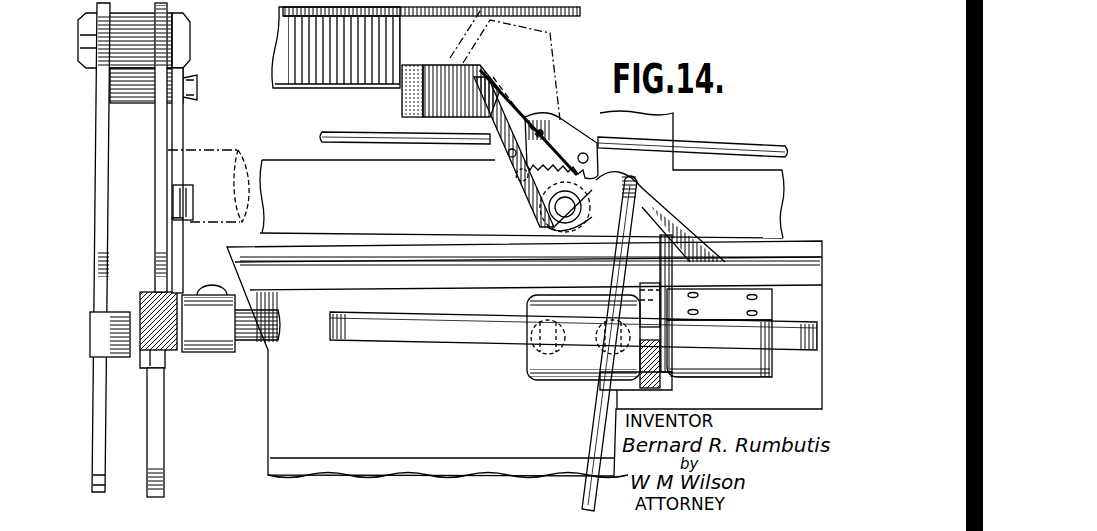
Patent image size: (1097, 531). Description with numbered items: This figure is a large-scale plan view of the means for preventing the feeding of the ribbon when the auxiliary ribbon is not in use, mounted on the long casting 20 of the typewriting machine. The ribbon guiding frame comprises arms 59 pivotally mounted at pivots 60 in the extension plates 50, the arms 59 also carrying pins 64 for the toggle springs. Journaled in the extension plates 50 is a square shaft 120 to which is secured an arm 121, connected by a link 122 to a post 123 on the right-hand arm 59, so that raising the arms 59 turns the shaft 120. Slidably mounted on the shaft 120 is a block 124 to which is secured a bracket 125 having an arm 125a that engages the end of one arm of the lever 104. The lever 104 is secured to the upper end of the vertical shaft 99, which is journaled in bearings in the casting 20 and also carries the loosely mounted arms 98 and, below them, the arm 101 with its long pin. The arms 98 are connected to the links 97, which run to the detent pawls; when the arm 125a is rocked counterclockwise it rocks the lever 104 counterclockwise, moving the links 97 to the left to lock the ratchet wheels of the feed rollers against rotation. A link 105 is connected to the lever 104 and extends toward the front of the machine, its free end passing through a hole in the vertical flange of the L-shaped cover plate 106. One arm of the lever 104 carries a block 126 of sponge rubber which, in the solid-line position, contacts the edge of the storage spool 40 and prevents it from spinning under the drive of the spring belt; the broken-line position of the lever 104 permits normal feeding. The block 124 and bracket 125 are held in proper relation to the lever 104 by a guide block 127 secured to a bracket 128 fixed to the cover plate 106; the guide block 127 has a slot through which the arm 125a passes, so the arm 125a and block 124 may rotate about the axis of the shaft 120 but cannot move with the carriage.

The casting 20 is at (423, 180).
The storage spool 40 is at (547, 17).
The extension plates 50 is at (155, 172).
The arms 59 is at (98, 423).
The pivots 60 is at (188, 37).
The pins 64 is at (212, 150).
The links 97 is at (358, 133).
The arms 98 is at (567, 137).
The vertical shaft 99 is at (563, 207).
The arm 101 is at (518, 187).
The lever 104 is at (510, 155).
The link 105 is at (595, 420).
The cover plate 106 is at (487, 460).
The square shaft 120 is at (377, 330).
The arm 121 is at (186, 256).
The link 122 is at (183, 115).
The post 123 is at (125, 107).
The block 124 is at (743, 353).
The bracket 125 is at (728, 302).
The arm 125a is at (692, 255).
The block 126 is at (400, 98).
The guide block 127 is at (600, 390).
The bracket 128 is at (527, 372).